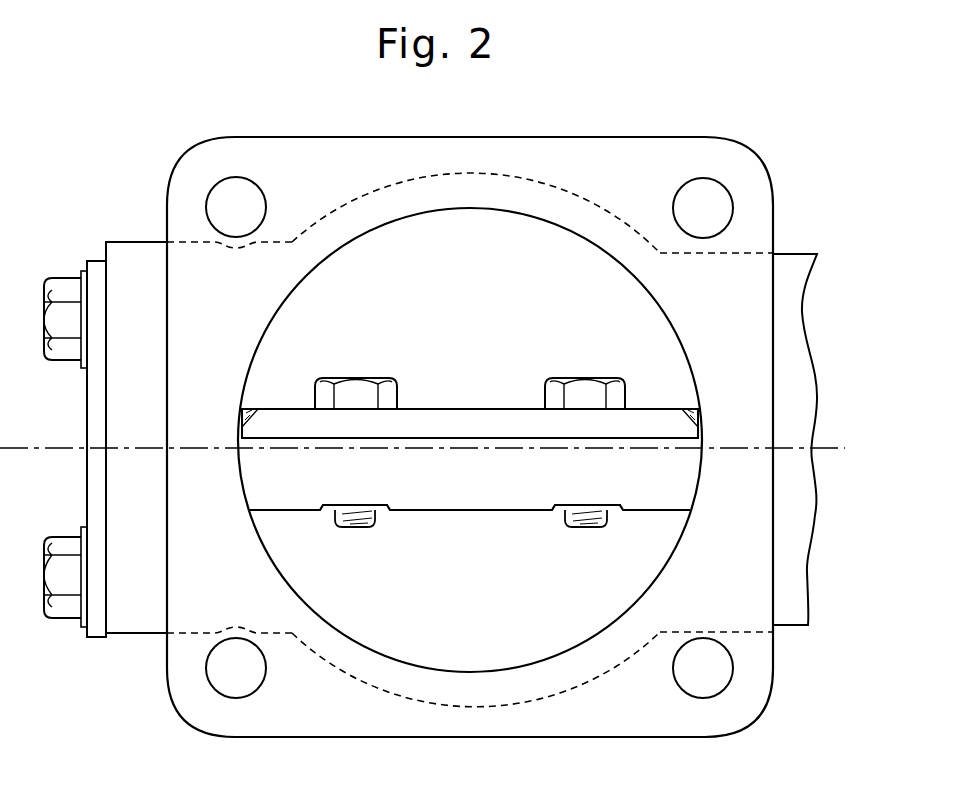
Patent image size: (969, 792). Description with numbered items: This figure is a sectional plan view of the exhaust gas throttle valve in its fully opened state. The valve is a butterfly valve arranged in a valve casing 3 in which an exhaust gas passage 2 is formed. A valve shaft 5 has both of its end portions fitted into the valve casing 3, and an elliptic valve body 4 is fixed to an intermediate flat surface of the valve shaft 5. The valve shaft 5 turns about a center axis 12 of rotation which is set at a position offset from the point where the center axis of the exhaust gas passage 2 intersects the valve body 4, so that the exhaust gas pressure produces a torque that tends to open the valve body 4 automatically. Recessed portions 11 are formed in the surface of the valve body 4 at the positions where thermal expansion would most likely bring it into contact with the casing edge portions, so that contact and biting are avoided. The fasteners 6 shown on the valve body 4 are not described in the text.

The exhaust gas passage 2 is at (386, 653).
The valve casing 3 is at (637, 168).
The valve body 4 is at (434, 426).
The valve shaft 5 is at (510, 511).
The bolt 6 is at (585, 378).
The recessed portions 11 is at (242, 412).
The center axis of rotation 12 is at (742, 452).